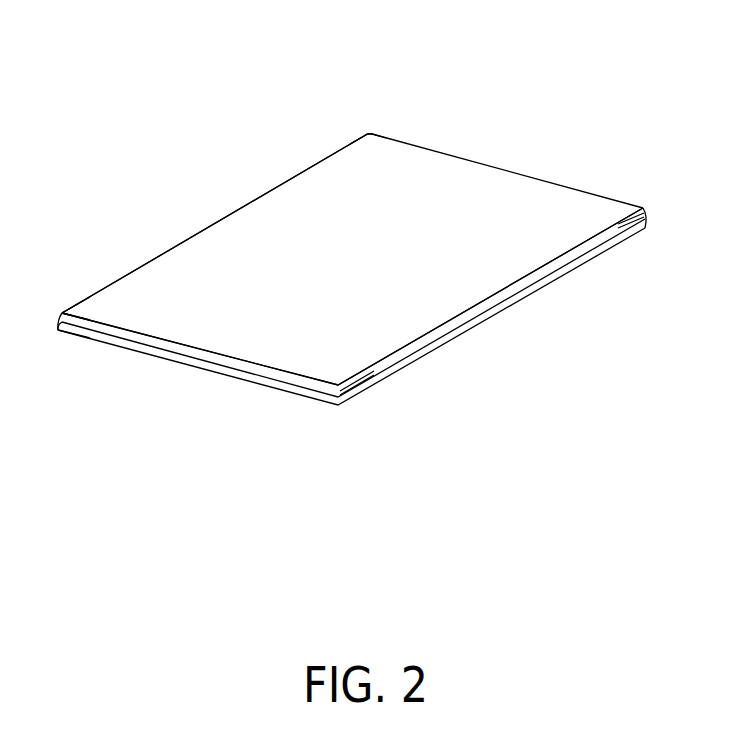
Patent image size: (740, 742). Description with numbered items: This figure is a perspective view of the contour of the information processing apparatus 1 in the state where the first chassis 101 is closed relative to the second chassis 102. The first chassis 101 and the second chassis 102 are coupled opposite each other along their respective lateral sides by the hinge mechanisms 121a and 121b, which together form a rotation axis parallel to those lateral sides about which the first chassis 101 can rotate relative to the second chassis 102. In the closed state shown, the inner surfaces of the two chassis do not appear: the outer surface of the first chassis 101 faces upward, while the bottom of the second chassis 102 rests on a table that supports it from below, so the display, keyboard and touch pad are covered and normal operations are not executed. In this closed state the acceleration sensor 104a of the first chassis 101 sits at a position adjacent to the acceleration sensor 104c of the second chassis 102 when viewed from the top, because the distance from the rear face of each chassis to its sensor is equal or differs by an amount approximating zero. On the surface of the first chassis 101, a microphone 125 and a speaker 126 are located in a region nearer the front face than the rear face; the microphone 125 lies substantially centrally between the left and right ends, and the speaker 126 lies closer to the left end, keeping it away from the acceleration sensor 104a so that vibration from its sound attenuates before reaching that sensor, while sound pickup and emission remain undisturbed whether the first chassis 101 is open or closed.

The information processing apparatus 1 is at (116, 56).
The first chassis 101 is at (500, 165).
The second chassis 102 is at (227, 372).
The acceleration sensor 104a is at (77, 311).
The acceleration sensor 104c is at (70, 335).
The hinge mechanism 121a is at (353, 393).
The hinge mechanism 121b is at (640, 233).
The microphone 125 is at (232, 210).
The speaker 126 is at (357, 135).